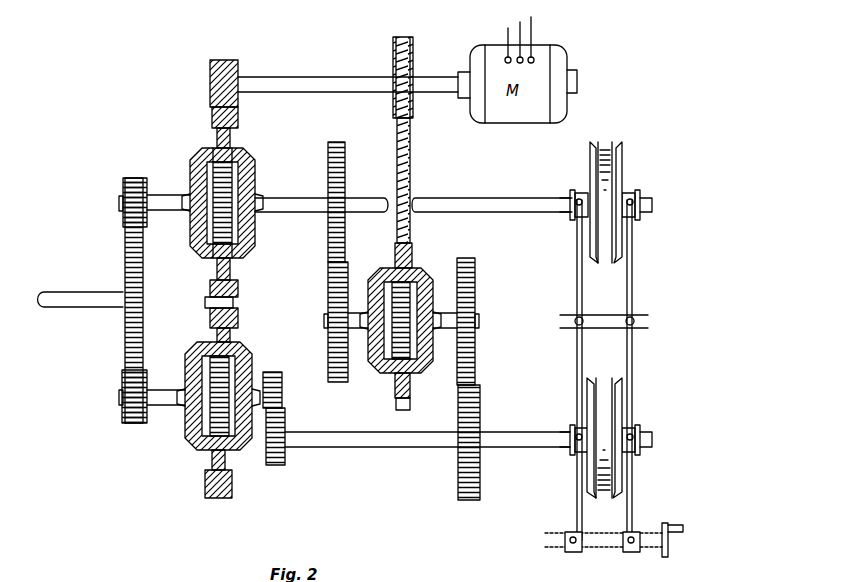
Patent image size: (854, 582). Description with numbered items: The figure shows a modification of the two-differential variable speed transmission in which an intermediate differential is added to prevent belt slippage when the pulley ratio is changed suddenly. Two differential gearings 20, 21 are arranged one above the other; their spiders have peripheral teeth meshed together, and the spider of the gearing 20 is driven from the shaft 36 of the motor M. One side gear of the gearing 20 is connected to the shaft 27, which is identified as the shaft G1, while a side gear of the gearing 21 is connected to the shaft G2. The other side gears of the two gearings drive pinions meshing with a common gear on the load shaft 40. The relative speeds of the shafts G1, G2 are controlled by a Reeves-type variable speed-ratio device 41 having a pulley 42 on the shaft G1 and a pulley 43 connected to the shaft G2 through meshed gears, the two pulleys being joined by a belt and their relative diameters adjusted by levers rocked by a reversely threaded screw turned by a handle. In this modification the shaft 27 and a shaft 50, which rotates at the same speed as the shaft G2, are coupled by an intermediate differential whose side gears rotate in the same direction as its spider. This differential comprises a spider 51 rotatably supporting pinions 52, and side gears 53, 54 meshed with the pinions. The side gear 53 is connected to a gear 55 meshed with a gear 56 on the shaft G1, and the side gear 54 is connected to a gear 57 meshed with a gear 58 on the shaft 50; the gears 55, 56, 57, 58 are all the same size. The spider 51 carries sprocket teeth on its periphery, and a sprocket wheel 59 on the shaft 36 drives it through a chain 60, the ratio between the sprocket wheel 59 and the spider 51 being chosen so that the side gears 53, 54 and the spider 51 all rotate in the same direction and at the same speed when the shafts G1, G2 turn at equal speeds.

The differential gearing 20 is at (181, 227).
The differential gearing 21 is at (179, 358).
The shaft 27 is at (521, 210).
The shaft 36 is at (326, 86).
The load shaft 40 is at (78, 304).
The variable speed-ratio device 41 is at (652, 306).
The pulley 42 is at (616, 243).
The pulley 43 is at (617, 398).
The shaft 50 is at (522, 436).
The spider 51 is at (413, 252).
The pinions 52 is at (417, 272).
The side gear 53 is at (370, 300).
The side gear 54 is at (433, 303).
The gear 55 is at (328, 285).
The gear 56 is at (328, 245).
The gear 57 is at (476, 360).
The gear 58 is at (481, 404).
The sprocket wheel 59 is at (413, 62).
The chain 60 is at (411, 158).
The shaft G1 is at (277, 197).
The shaft G2 is at (266, 378).